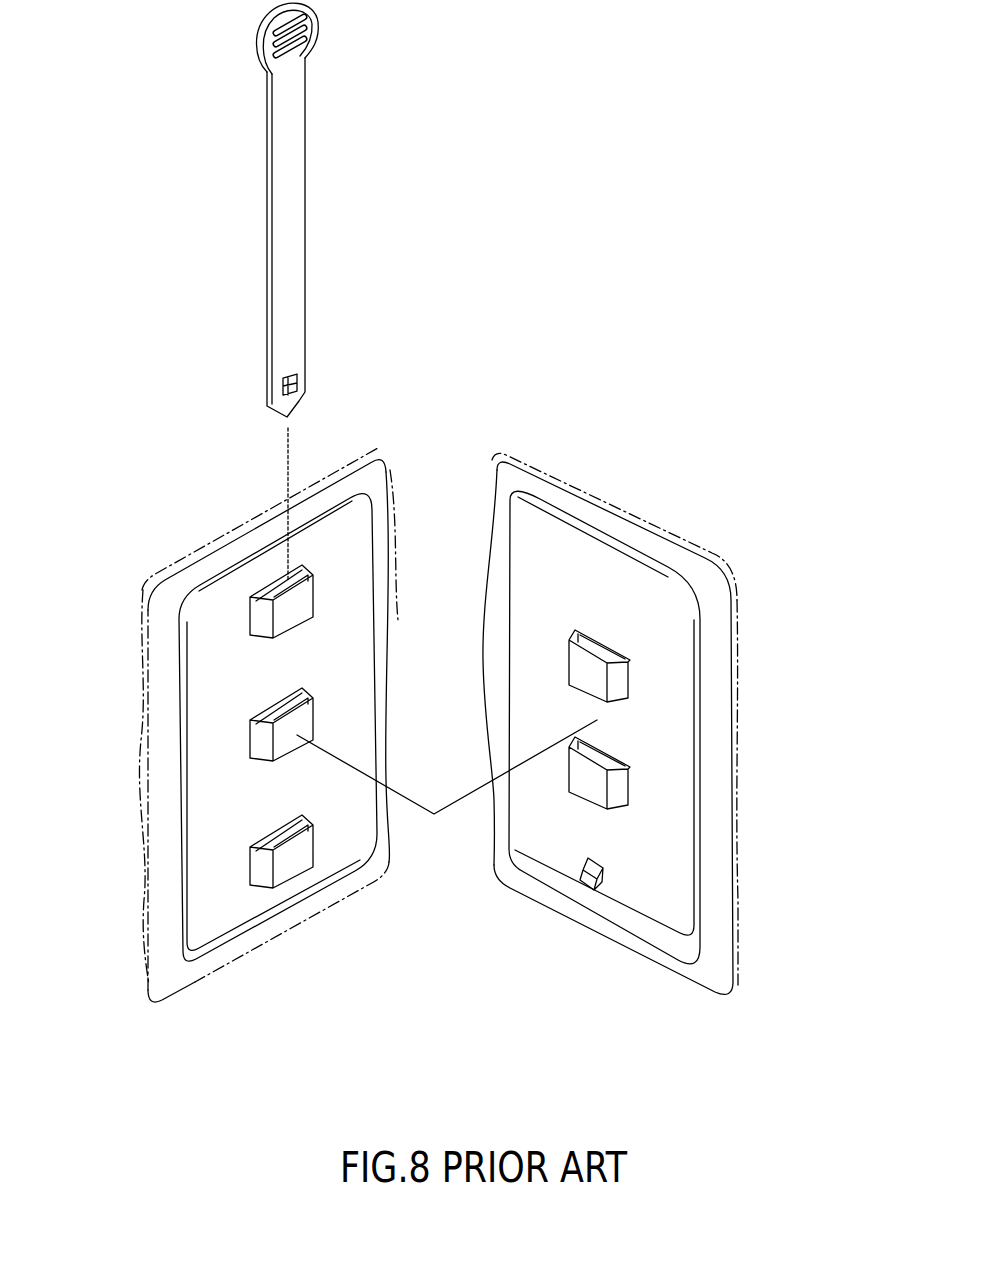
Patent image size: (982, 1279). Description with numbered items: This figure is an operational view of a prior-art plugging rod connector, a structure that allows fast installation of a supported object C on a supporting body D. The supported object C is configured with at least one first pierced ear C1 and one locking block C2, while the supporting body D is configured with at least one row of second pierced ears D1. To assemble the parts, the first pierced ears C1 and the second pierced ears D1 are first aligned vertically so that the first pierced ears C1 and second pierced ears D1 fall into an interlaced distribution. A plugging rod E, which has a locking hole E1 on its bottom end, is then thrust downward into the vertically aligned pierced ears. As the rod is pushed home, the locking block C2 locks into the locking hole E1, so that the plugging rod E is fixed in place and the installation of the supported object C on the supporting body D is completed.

The plugging rod E is at (290, 210).
The locking hole E1 is at (292, 381).
The supporting body D is at (213, 812).
The second pierced ears D1 is at (280, 855).
The supported object C is at (557, 583).
The first pierced ear C1 is at (593, 785).
The locking block C2 is at (592, 866).